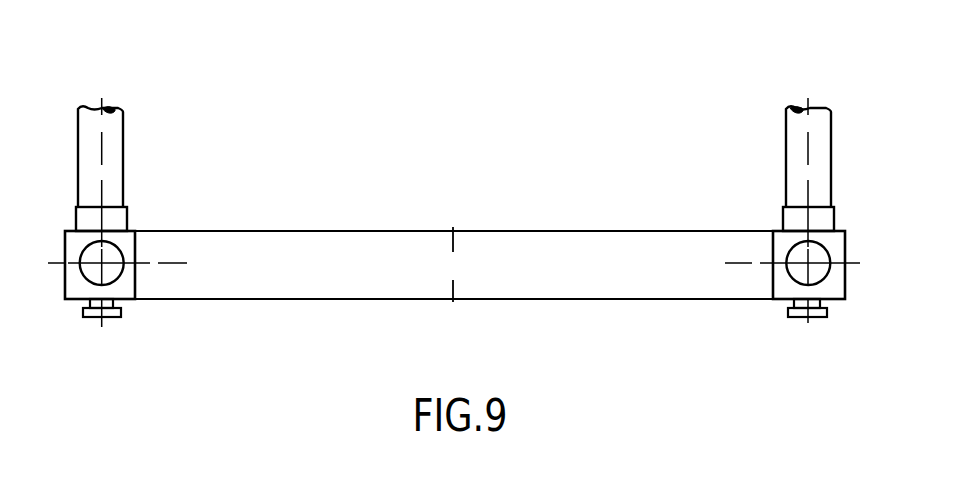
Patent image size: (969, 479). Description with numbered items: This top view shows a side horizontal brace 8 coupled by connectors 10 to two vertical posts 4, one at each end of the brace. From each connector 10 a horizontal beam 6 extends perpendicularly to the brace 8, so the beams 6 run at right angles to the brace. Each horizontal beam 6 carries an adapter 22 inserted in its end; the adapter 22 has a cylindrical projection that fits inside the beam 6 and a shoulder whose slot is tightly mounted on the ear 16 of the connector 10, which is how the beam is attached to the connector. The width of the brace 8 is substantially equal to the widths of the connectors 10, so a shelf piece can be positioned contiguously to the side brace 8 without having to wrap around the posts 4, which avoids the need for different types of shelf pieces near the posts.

The vertical post 4 is at (112, 272).
The horizontal beam 6 is at (795, 169).
The side horizontal brace 8 is at (377, 248).
The connector 10 is at (838, 287).
The ear 16 is at (800, 318).
The adapter 22 is at (115, 220).